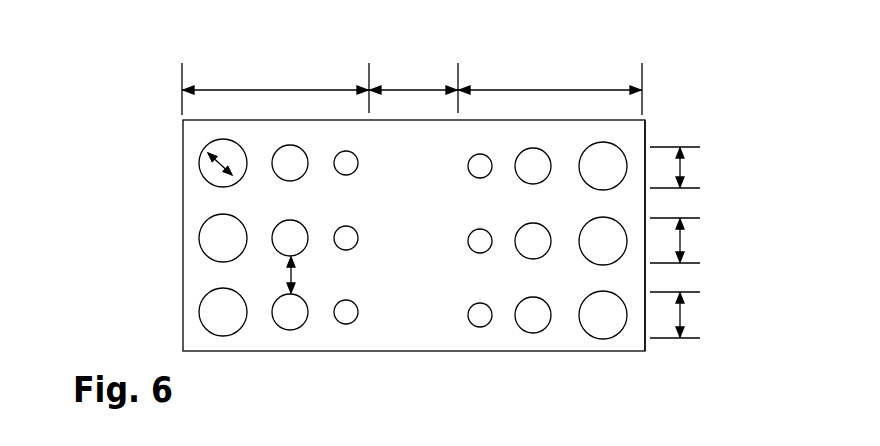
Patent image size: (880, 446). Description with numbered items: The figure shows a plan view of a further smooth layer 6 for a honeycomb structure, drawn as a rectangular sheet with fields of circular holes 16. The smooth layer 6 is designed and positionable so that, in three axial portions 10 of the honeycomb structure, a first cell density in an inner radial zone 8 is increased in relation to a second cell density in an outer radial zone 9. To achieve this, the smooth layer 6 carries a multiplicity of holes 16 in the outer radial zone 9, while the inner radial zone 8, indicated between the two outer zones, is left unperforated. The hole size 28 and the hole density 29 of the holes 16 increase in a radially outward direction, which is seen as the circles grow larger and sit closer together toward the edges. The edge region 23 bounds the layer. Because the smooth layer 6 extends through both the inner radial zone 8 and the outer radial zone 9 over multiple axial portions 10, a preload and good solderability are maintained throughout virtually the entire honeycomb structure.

The smooth layer 6 is at (190, 131).
The inner radial zone 8 is at (401, 88).
The outer radial zone 9 is at (258, 88).
The axial portion 10 is at (684, 164).
The holes 16 is at (212, 239).
The plate edge 23 is at (645, 119).
The hole size 28 is at (218, 167).
The hole density 29 is at (287, 275).